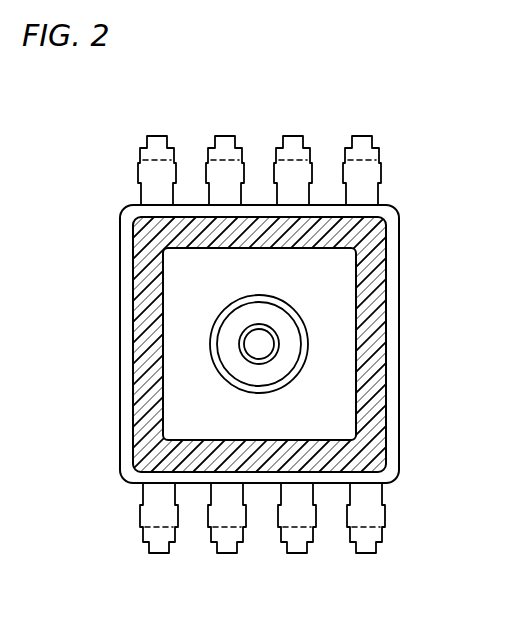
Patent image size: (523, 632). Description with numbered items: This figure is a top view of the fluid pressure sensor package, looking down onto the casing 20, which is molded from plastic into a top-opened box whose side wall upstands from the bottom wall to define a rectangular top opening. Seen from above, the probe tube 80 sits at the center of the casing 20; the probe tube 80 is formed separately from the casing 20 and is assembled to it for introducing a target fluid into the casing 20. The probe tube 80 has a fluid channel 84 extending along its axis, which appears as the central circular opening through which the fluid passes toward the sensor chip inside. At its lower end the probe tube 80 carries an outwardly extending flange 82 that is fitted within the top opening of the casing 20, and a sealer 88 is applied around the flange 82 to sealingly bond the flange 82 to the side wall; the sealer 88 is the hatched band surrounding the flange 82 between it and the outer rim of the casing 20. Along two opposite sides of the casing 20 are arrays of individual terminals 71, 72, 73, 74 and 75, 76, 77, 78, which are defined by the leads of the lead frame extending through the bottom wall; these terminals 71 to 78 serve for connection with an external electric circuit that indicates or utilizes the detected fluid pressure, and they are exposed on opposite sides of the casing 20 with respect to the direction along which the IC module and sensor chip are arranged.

The casing 20 is at (121, 430).
The terminal 71 is at (157, 542).
The terminal 72 is at (232, 542).
The terminal 73 is at (298, 542).
The terminal 74 is at (368, 542).
The terminal 75 is at (156, 137).
The terminal 76 is at (224, 137).
The terminal 77 is at (290, 137).
The terminal 78 is at (359, 137).
The probe tube 80 is at (298, 368).
The flange 82 is at (183, 335).
The fluid channel 84 is at (262, 340).
The sealer 88 is at (148, 275).